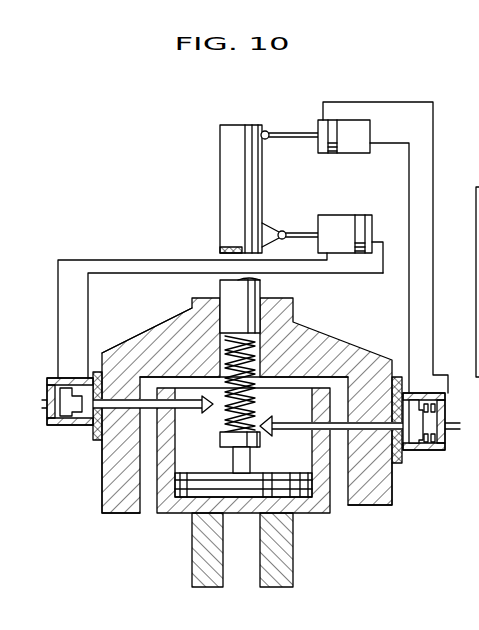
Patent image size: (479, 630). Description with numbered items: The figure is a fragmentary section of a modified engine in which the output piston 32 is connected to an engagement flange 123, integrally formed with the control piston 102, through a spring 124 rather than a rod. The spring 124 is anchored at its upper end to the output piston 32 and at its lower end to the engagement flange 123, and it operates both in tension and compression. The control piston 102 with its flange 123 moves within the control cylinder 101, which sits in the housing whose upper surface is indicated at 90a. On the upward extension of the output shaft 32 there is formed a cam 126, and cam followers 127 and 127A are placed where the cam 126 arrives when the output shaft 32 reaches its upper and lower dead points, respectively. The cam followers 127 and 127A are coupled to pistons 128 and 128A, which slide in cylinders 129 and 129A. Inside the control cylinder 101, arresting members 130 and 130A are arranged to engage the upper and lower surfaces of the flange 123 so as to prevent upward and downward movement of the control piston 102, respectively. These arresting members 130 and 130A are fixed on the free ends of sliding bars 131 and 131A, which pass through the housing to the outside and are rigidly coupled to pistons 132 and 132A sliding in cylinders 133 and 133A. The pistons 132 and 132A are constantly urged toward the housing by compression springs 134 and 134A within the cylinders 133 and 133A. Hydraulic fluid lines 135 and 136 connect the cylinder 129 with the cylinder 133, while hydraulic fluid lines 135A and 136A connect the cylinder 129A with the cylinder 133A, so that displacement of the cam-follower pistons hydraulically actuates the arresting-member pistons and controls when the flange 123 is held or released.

The output piston 32 is at (263, 283).
The housing top surface 90a is at (163, 342).
The control cylinder 101 is at (163, 478).
The control piston 102 is at (247, 495).
The engagement flange 123 is at (220, 436).
The spring 124 is at (328, 340).
The cam 126 is at (221, 208).
The cam follower 127 is at (265, 130).
The cam follower 127A is at (282, 224).
The piston 128 is at (330, 155).
The piston 128A is at (358, 215).
The cylinder 129 is at (358, 120).
The cylinder 129A is at (343, 215).
The arresting member 130 is at (266, 436).
The arresting member 130A is at (207, 397).
The sliding bar 131 is at (355, 505).
The sliding bar 131A is at (125, 513).
The piston 132 is at (404, 463).
The piston 132A is at (73, 425).
The cylinder 133 is at (445, 450).
The cylinder 133A is at (83, 430).
The compression spring 134 is at (423, 452).
The compression spring 134A is at (58, 427).
The hydraulic fluid line 135 is at (409, 297).
The hydraulic fluid line 135A is at (88, 302).
The hydraulic fluid line 136 is at (433, 122).
The hydraulic fluid line 136A is at (183, 260).